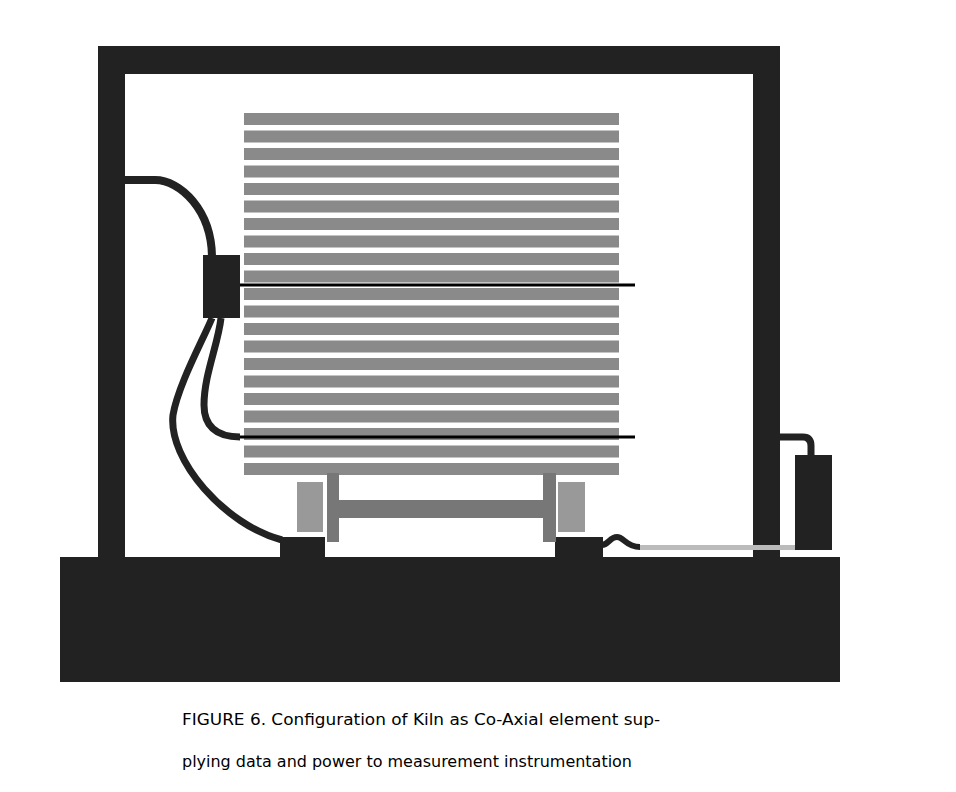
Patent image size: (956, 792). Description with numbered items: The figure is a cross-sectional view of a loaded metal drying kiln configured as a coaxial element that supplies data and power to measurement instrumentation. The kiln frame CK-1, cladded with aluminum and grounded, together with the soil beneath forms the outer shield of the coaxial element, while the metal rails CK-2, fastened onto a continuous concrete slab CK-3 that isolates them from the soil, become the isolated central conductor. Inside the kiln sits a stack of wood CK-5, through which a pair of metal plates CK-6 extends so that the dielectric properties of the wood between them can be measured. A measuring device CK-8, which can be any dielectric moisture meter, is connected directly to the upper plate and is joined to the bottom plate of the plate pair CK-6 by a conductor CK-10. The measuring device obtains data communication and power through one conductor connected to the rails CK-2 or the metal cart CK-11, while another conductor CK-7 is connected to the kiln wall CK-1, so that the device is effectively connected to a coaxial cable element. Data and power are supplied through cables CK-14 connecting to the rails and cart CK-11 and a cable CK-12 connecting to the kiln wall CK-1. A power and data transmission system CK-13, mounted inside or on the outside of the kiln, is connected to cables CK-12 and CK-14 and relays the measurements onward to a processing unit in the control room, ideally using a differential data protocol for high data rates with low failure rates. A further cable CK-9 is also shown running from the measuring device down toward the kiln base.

The kiln frame 1 is at (343, 31).
The rails 2 is at (518, 557).
The concrete slab 3 is at (45, 562).
The stack of wood 5 is at (645, 184).
The plates 6 is at (642, 312).
The conductor 7 is at (183, 170).
The measuring device 8 is at (227, 238).
The ground cable 9 is at (170, 378).
The conductor 10 is at (212, 446).
The metal cart 11 is at (600, 510).
The cable 12 is at (796, 415).
The power and data transmission system 13 is at (848, 470).
The cables 14 is at (726, 530).